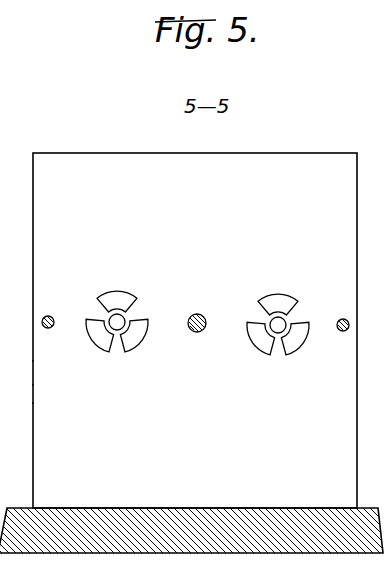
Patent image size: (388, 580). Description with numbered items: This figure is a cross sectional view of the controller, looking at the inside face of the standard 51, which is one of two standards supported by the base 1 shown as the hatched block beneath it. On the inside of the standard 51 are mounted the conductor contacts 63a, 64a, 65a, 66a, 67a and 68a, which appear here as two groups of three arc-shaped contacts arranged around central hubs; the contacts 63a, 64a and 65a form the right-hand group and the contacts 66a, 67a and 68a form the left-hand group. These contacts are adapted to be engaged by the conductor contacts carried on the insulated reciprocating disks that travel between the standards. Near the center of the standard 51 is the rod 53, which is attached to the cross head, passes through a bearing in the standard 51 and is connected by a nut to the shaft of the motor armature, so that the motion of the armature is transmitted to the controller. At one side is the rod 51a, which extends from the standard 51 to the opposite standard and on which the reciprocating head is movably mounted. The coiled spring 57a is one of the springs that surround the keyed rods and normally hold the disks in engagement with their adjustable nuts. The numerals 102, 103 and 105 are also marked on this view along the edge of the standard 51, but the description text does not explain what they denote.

The base 1 is at (163, 537).
The standard 51 is at (195, 330).
The rod 51a is at (350, 325).
The coiled spring 57a is at (42, 322).
The rod 53 is at (193, 331).
The conductor contact 63a is at (302, 327).
The conductor contact 64a is at (262, 297).
The conductor contact 65a is at (253, 333).
The conductor contact 66a is at (145, 322).
The conductor contact 67a is at (118, 292).
The conductor contact 68a is at (93, 332).
The layer 102 is at (16, 386).
The layer 103 is at (16, 363).
The layer 105 is at (32, 402).